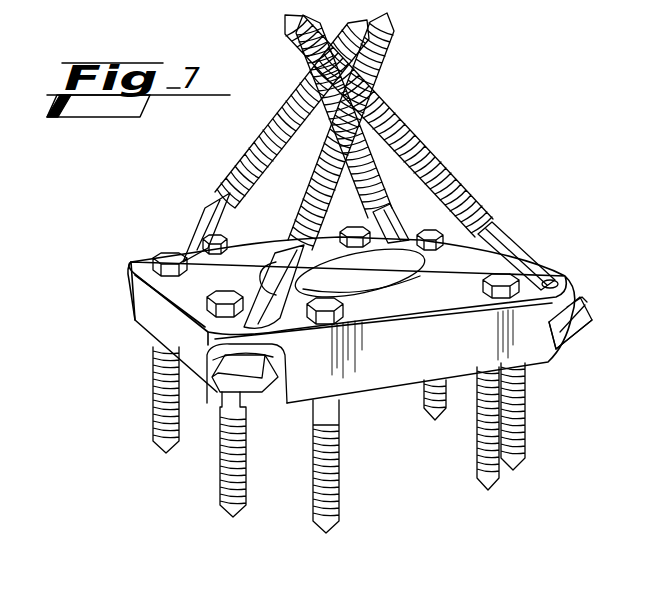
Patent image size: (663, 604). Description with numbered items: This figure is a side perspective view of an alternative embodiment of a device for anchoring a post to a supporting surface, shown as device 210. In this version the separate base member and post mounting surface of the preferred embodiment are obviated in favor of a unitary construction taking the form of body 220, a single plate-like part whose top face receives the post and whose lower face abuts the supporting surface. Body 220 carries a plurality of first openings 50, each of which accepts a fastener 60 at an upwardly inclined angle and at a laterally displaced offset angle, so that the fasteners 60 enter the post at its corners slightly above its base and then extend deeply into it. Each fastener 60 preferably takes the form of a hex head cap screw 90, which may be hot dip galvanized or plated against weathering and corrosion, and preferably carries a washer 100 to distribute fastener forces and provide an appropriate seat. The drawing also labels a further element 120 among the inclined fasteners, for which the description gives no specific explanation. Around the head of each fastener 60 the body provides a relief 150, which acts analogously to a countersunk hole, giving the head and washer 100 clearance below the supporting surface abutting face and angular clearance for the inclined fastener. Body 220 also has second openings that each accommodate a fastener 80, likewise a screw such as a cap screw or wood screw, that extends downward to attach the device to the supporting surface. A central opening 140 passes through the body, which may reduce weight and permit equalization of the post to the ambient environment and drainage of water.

The first opening 50 is at (545, 280).
The fastener 60 is at (503, 237).
The fastener 80 is at (340, 490).
The hex head cap screw 90 is at (577, 345).
The washer 100 is at (578, 296).
The bone screw 120 is at (226, 186).
The central opening 140 is at (371, 264).
The relief 150 is at (282, 390).
The device 210 is at (129, 362).
The body 220 is at (447, 357).